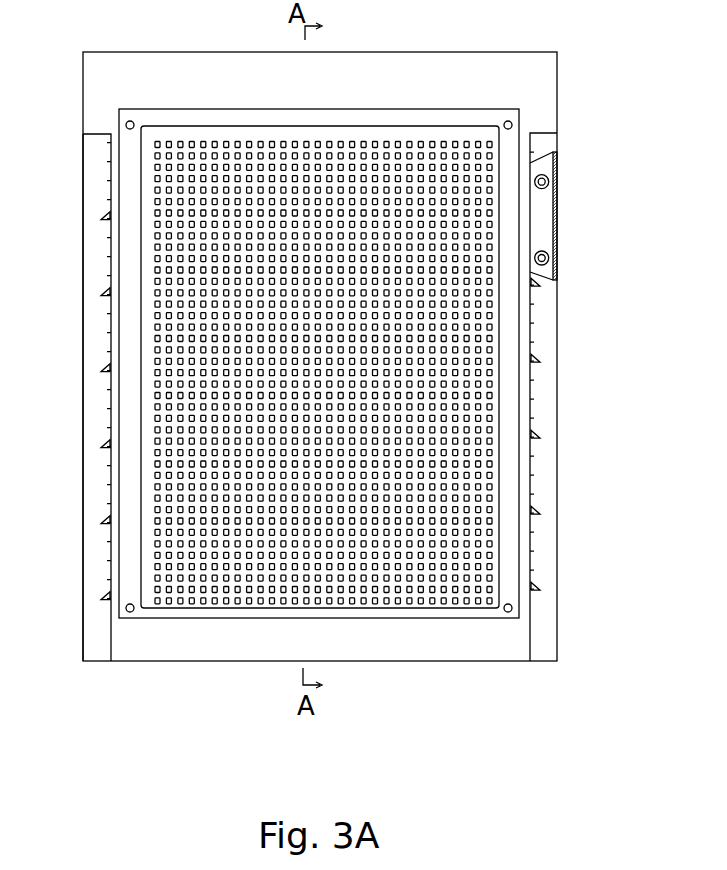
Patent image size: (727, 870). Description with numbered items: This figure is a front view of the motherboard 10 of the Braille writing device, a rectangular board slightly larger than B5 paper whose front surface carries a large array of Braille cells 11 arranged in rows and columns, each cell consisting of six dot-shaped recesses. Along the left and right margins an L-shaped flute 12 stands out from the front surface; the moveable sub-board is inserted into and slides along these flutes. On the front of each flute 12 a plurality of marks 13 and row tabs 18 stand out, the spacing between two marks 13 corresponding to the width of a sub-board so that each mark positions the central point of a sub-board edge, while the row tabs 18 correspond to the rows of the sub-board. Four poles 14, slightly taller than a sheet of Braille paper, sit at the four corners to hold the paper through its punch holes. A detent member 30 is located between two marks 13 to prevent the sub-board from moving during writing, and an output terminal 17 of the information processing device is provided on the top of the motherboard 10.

The motherboard 10 is at (206, 671).
The Braille cells 11 is at (487, 138).
The flute 12 is at (98, 131).
The marks 13 is at (100, 521).
The poles 14 is at (162, 88).
The output terminal 17 is at (83, 323).
The row tabs 18 is at (104, 143).
The detent member 30 is at (549, 183).